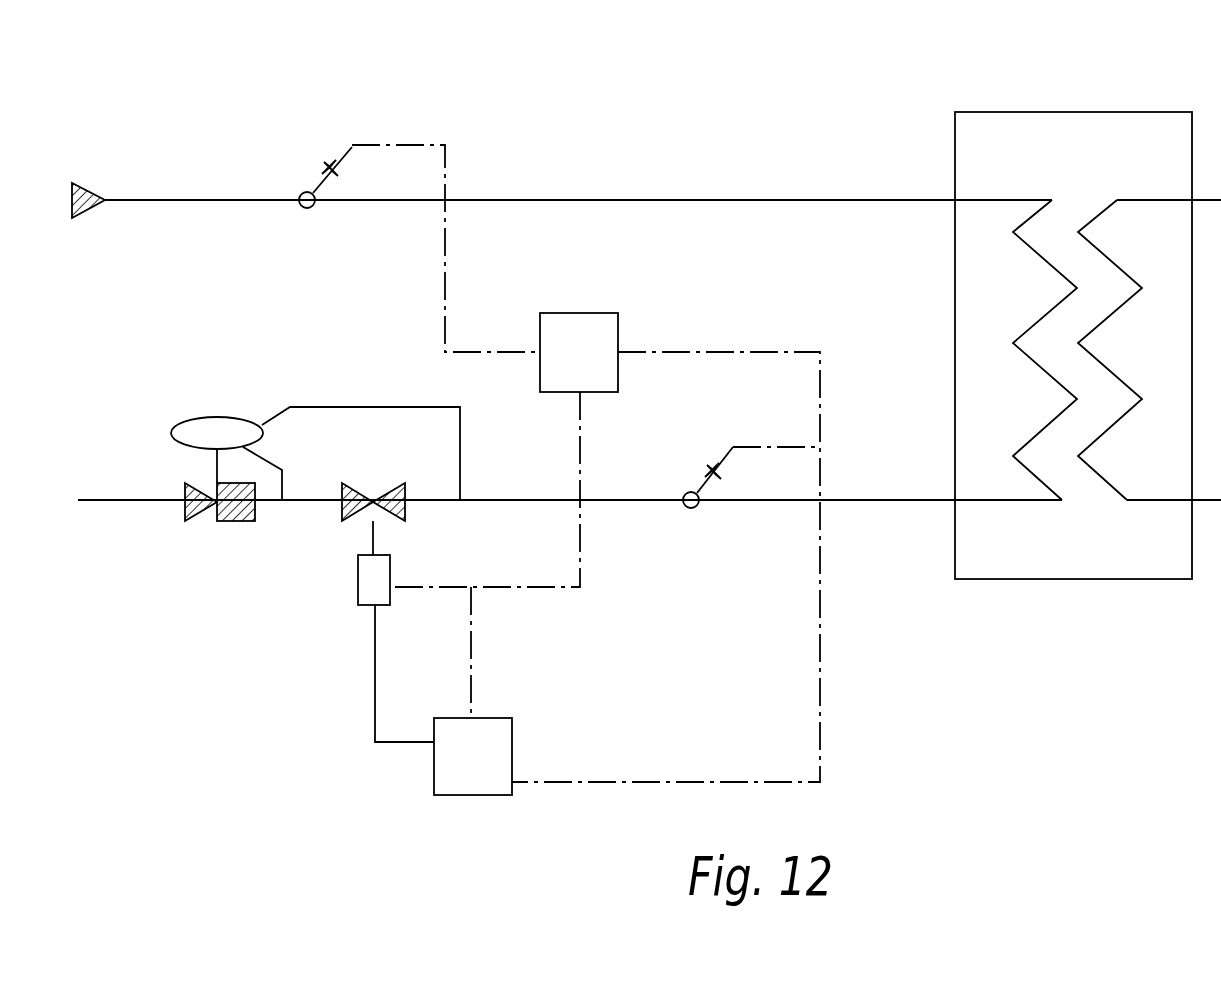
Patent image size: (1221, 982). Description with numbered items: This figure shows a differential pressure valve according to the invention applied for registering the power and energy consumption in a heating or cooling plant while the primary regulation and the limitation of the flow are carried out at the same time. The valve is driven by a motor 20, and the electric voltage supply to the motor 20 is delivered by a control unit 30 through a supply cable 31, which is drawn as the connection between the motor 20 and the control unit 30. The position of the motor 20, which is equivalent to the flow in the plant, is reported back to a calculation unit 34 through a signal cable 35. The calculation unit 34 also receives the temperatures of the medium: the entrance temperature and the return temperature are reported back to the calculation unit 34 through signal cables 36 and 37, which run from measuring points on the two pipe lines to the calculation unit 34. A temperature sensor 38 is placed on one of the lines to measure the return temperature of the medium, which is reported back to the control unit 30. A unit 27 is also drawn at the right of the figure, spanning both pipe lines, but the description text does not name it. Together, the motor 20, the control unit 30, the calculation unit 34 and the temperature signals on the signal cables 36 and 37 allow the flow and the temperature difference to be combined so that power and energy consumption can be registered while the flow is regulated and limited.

The motor 20 is at (365, 572).
The heat exchanger 27 is at (1002, 148).
The control unit 30 is at (502, 758).
The supply cable 31 is at (375, 707).
The calculation unit 34 is at (573, 325).
The signal cable 35 is at (580, 472).
The signal cable 36 is at (445, 316).
The signal cable 37 is at (677, 352).
The temperature sensor 38 is at (307, 192).